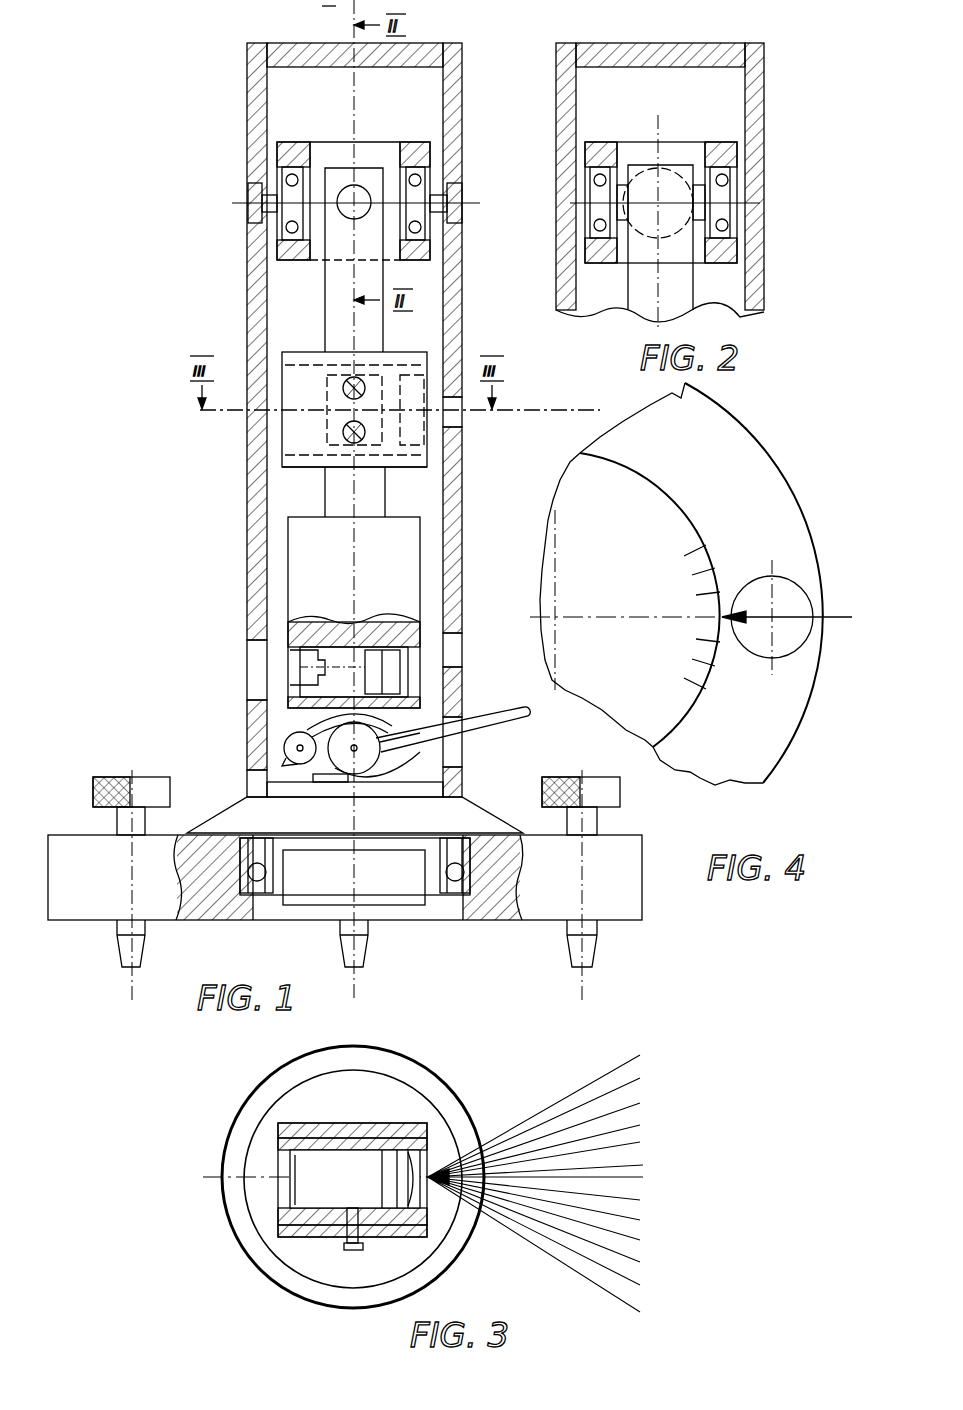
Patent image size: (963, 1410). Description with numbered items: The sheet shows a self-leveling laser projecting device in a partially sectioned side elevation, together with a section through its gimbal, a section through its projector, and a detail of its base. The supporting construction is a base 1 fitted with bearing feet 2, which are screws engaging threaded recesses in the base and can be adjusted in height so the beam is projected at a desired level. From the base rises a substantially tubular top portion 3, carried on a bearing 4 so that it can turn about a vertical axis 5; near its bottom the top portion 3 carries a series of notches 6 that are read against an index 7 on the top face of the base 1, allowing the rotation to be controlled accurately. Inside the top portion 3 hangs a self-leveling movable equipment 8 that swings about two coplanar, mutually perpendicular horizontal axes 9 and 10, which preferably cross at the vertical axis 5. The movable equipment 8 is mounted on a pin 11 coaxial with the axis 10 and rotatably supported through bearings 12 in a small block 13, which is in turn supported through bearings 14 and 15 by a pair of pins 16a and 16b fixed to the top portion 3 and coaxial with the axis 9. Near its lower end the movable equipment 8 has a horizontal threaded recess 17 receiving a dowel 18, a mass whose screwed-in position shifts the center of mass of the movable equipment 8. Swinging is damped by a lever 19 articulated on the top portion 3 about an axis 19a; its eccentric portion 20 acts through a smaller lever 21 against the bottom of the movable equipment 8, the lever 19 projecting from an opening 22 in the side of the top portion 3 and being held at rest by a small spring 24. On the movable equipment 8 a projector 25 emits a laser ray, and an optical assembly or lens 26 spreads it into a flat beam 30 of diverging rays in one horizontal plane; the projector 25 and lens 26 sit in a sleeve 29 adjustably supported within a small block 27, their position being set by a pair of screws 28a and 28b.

In FIG. 1, the base 1 is at (612, 895).
In FIG. 4, the base 1 is at (737, 765).
In FIG. 1, the bearing feet 2 is at (117, 827).
In FIG. 1, the top portion 3 is at (453, 545).
In FIG. 4, the top portion 3 is at (648, 497).
In FIG. 3, the top portion 3 is at (400, 1067).
In FIG. 1, the bearing 4 is at (433, 893).
In FIG. 1, the vertical axis 5 is at (322, 24).
In FIG. 4, the notches 6 is at (700, 560).
In FIG. 4, the index 7 is at (762, 612).
In FIG. 1, the self-leveling movable equipment 8 is at (335, 303).
In FIG. 3, the self-leveling movable equipment 8 is at (322, 1123).
In FIG. 1, the horizontal axis 9 is at (262, 192).
In FIG. 1, the horizontal axis 10 is at (354, 202).
In FIG. 2, the pin 11 is at (725, 212).
In FIG. 2, the bearings 12 is at (725, 186).
In FIG. 2, the small block 13 is at (720, 155).
In FIG. 1, the bearing 14 is at (430, 167).
In FIG. 1, the bearing 15 is at (278, 158).
In FIG. 1, the pin 16a is at (447, 210).
In FIG. 1, the pin 16b is at (262, 203).
In FIG. 1, the threaded recess 17 is at (298, 662).
In FIG. 1, the dowel 18 is at (300, 678).
In FIG. 1, the lever 19 is at (480, 717).
In FIG. 1, the axis 19a is at (362, 775).
In FIG. 1, the eccentric portion 20 is at (290, 740).
In FIG. 1, the smaller lever 21 is at (400, 700).
In FIG. 1, the opening 22 is at (452, 752).
In FIG. 1, the small spring 24 is at (367, 735).
In FIG. 1, the projector 25 is at (390, 393).
In FIG. 3, the projector 25 is at (310, 1178).
In FIG. 1, the optical assembly or lens 26 is at (417, 430).
In FIG. 3, the optical assembly or lens 26 is at (430, 1125).
In FIG. 1, the small block 27 is at (307, 463).
In FIG. 1, the screw 28a is at (348, 432).
In FIG. 3, the screw 28a is at (350, 1248).
In FIG. 1, the screw 28b is at (348, 385).
In FIG. 3, the sleeve 29 is at (440, 1262).
In FIG. 3, the flat beam 30 is at (612, 1163).